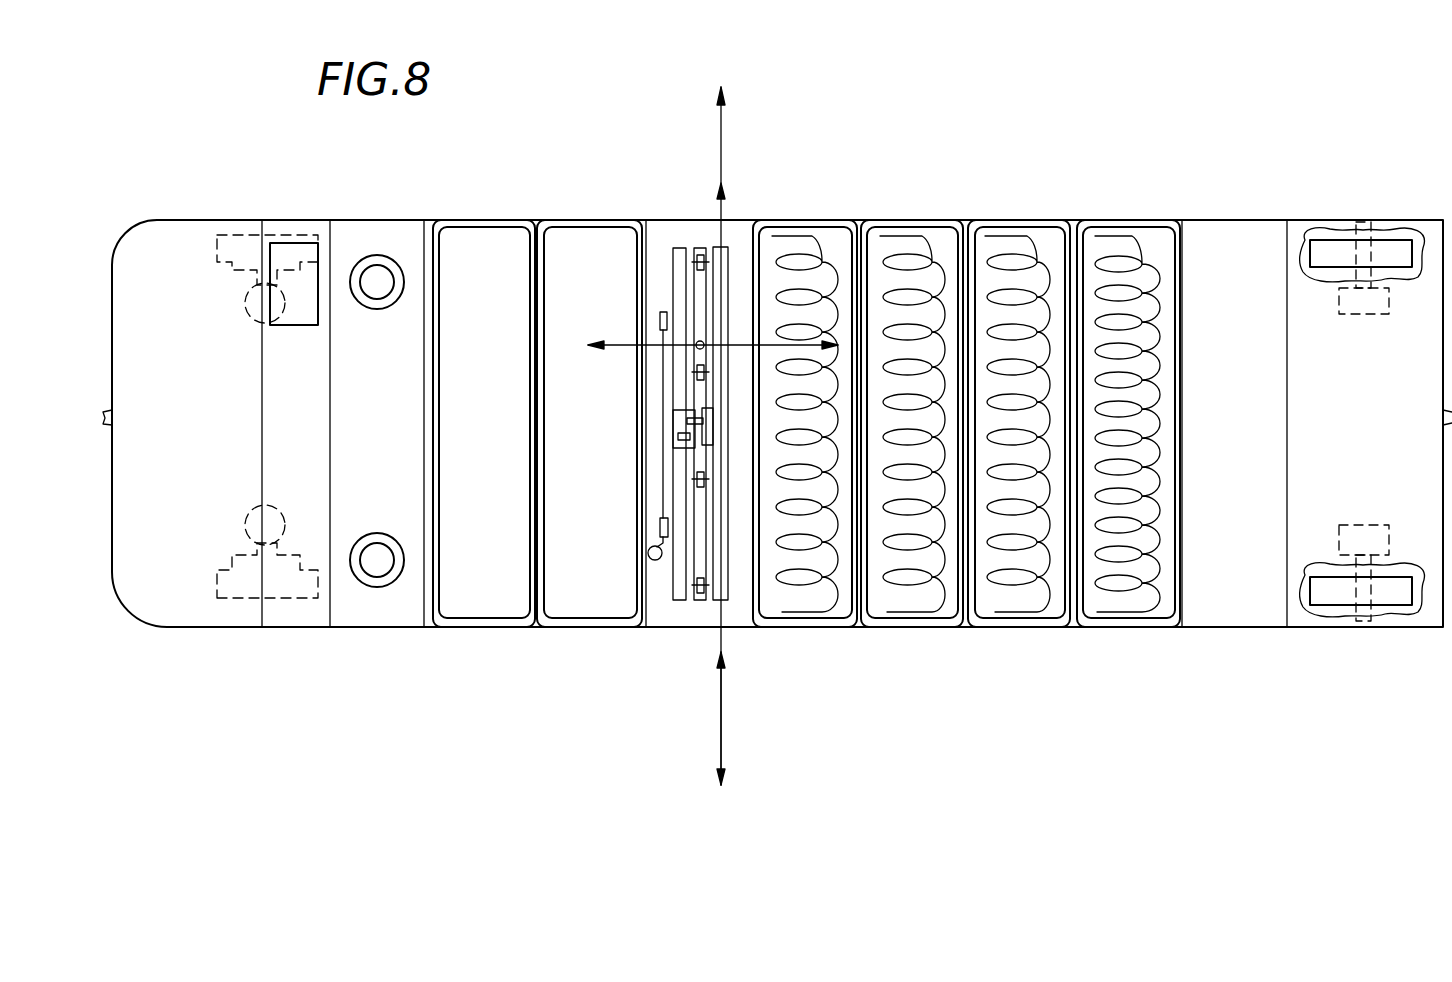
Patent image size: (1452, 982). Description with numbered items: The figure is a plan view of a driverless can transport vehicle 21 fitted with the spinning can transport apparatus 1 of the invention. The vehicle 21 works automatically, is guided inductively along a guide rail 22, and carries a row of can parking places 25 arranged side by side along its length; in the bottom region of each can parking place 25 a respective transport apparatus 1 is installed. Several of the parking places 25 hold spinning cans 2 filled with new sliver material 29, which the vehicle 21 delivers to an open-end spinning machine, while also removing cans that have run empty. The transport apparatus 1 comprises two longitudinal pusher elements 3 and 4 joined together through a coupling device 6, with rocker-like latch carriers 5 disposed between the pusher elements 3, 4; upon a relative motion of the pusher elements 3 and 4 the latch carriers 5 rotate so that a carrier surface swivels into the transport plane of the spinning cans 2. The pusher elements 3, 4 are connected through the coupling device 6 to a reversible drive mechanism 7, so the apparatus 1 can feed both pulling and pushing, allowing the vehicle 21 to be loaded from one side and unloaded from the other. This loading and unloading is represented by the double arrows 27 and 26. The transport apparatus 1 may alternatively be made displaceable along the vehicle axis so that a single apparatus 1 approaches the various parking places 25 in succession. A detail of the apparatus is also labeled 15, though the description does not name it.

The spinning can transport apparatus 1 is at (668, 424).
The spinning cans 2 is at (496, 222).
The pusher element 3 is at (717, 268).
The pusher element 4 is at (673, 248).
The latch carriers 5 is at (700, 248).
The coupling device 6 is at (652, 405).
The reversible drive mechanism 7 is at (648, 553).
The carriage 15 is at (688, 421).
The can transport vehicle 21 is at (1024, 162).
The guide rail 22 is at (1443, 412).
The can parking places 25 is at (815, 634).
The double arrow 26 is at (722, 128).
The double arrow 27 is at (721, 733).
The sliver material 29 is at (907, 255).